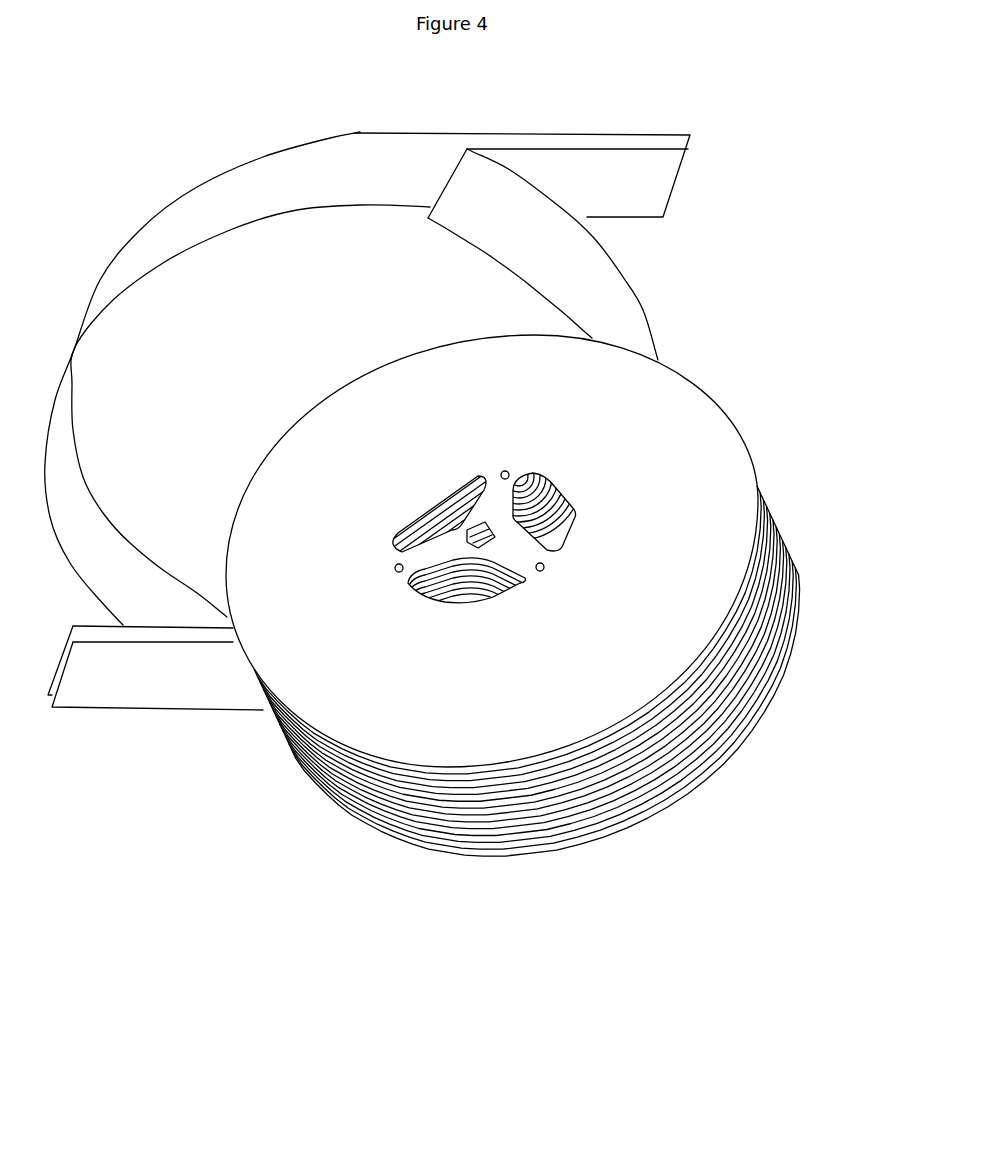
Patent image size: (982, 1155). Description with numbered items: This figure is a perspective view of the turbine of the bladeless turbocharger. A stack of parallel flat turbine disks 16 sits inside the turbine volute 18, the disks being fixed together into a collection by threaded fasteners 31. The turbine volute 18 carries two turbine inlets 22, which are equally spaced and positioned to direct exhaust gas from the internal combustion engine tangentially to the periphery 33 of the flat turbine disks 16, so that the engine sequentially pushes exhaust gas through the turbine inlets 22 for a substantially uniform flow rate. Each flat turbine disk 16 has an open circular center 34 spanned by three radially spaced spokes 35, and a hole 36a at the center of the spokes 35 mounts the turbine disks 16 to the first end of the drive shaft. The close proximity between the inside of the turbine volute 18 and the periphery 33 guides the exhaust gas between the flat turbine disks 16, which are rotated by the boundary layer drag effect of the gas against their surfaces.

The flat turbine disk 16 is at (452, 833).
The turbine volute 18 is at (645, 303).
The turbine inlet 22 is at (542, 140).
The threaded fastener 31 is at (547, 565).
The periphery 33 is at (373, 740).
The open circular center 34 is at (572, 505).
The radially spaced spoke 35 is at (430, 555).
The hole 36a is at (497, 522).